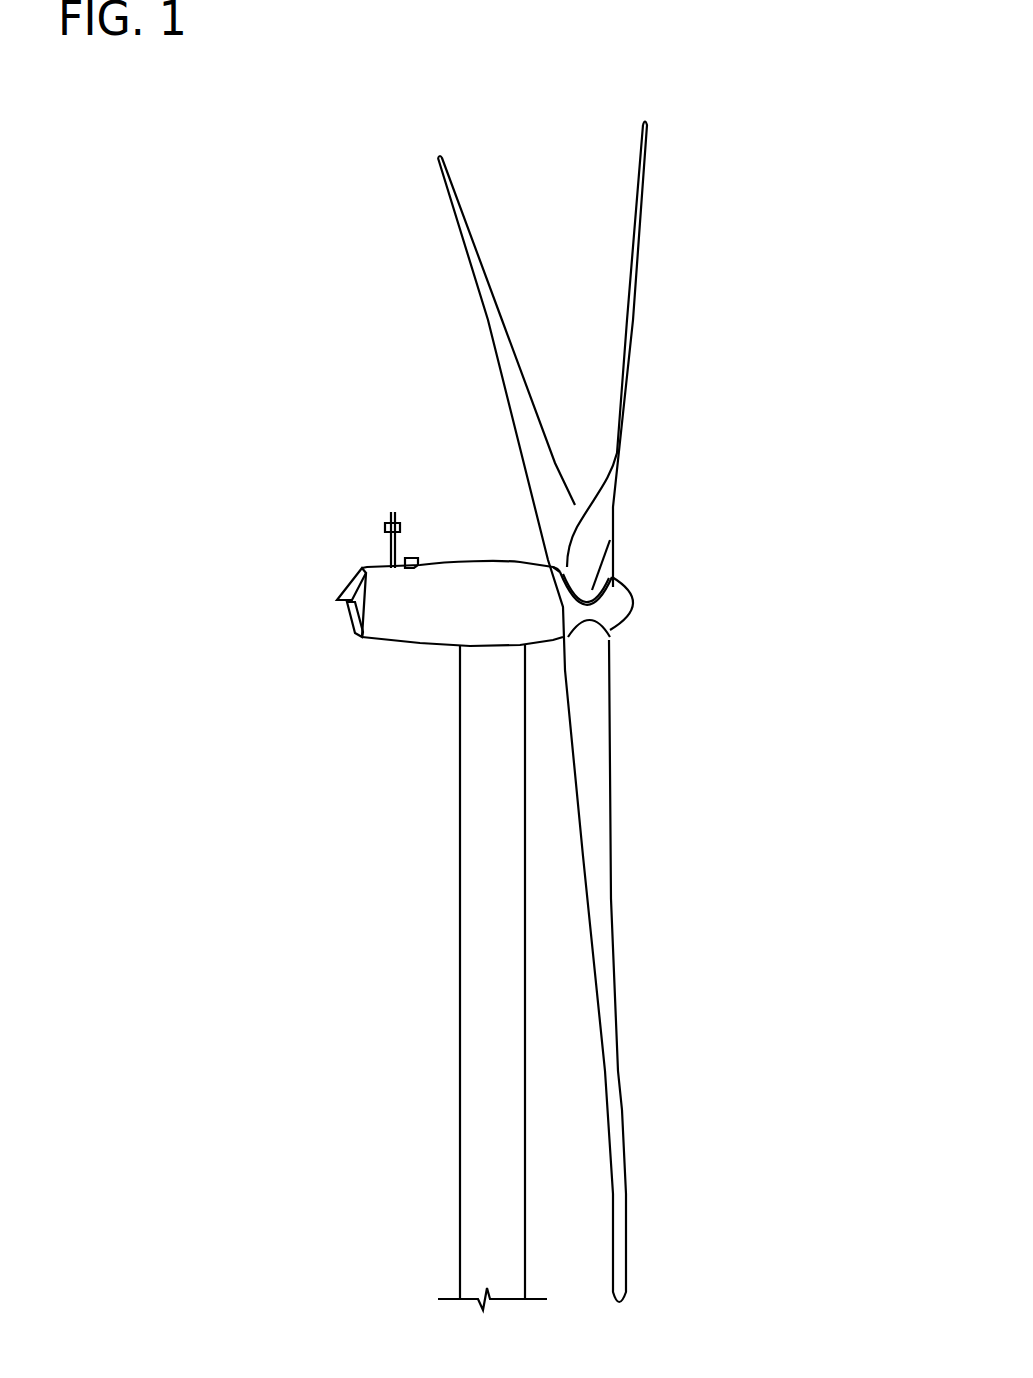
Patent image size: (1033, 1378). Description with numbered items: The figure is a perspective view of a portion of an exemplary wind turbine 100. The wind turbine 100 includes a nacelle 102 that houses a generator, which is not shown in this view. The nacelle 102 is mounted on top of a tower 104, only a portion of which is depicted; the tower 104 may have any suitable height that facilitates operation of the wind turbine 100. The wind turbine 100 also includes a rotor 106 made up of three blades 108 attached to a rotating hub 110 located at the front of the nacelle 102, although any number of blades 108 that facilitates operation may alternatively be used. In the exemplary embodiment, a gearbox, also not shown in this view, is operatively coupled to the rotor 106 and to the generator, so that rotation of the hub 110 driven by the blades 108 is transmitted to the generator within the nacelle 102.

The wind turbine 100 is at (325, 206).
The nacelle 102 is at (392, 642).
The tower 104 is at (460, 923).
The rotor 106 is at (685, 340).
The blades 108 is at (477, 243).
The rotating hub 110 is at (630, 612).